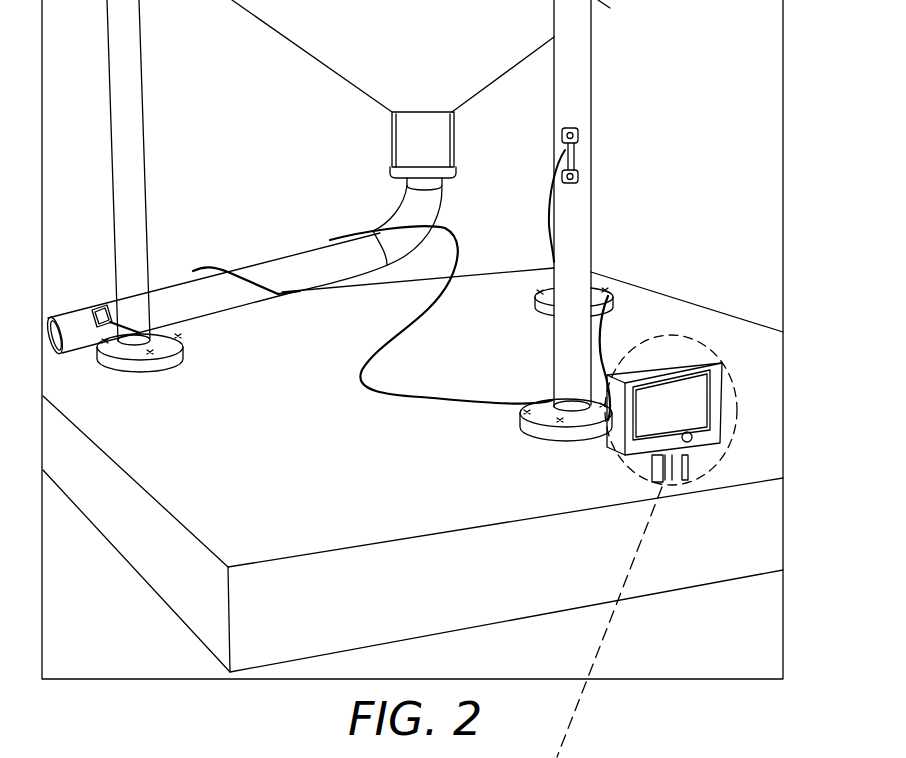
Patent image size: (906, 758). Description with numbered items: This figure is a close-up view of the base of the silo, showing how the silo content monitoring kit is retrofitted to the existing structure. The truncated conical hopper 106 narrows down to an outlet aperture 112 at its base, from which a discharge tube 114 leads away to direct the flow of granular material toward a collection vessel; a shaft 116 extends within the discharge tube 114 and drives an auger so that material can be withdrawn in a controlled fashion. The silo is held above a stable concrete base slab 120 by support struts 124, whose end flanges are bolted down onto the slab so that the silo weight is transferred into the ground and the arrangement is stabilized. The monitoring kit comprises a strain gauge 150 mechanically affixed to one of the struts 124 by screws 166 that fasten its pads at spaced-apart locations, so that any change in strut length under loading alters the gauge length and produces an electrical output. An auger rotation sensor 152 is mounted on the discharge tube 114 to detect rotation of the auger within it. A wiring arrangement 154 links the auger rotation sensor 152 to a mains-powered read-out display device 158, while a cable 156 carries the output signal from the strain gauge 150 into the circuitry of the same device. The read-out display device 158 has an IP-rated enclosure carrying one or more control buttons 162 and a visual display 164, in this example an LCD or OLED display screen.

The hopper 106 is at (441, 59).
The outlet aperture 112 is at (393, 115).
The discharge tube 114 is at (297, 262).
The shaft 116 is at (55, 354).
The base slab 120 is at (142, 569).
The support struts 124 is at (140, 128).
The strain gauge 150 is at (563, 152).
The auger rotation sensor 152 is at (101, 306).
The wiring arrangement 154 is at (410, 396).
The cable 156 is at (610, 318).
The read-out display device 158 is at (622, 425).
The control buttons 162 is at (692, 443).
The visual display 164 is at (683, 393).
The screws 166 is at (580, 133).